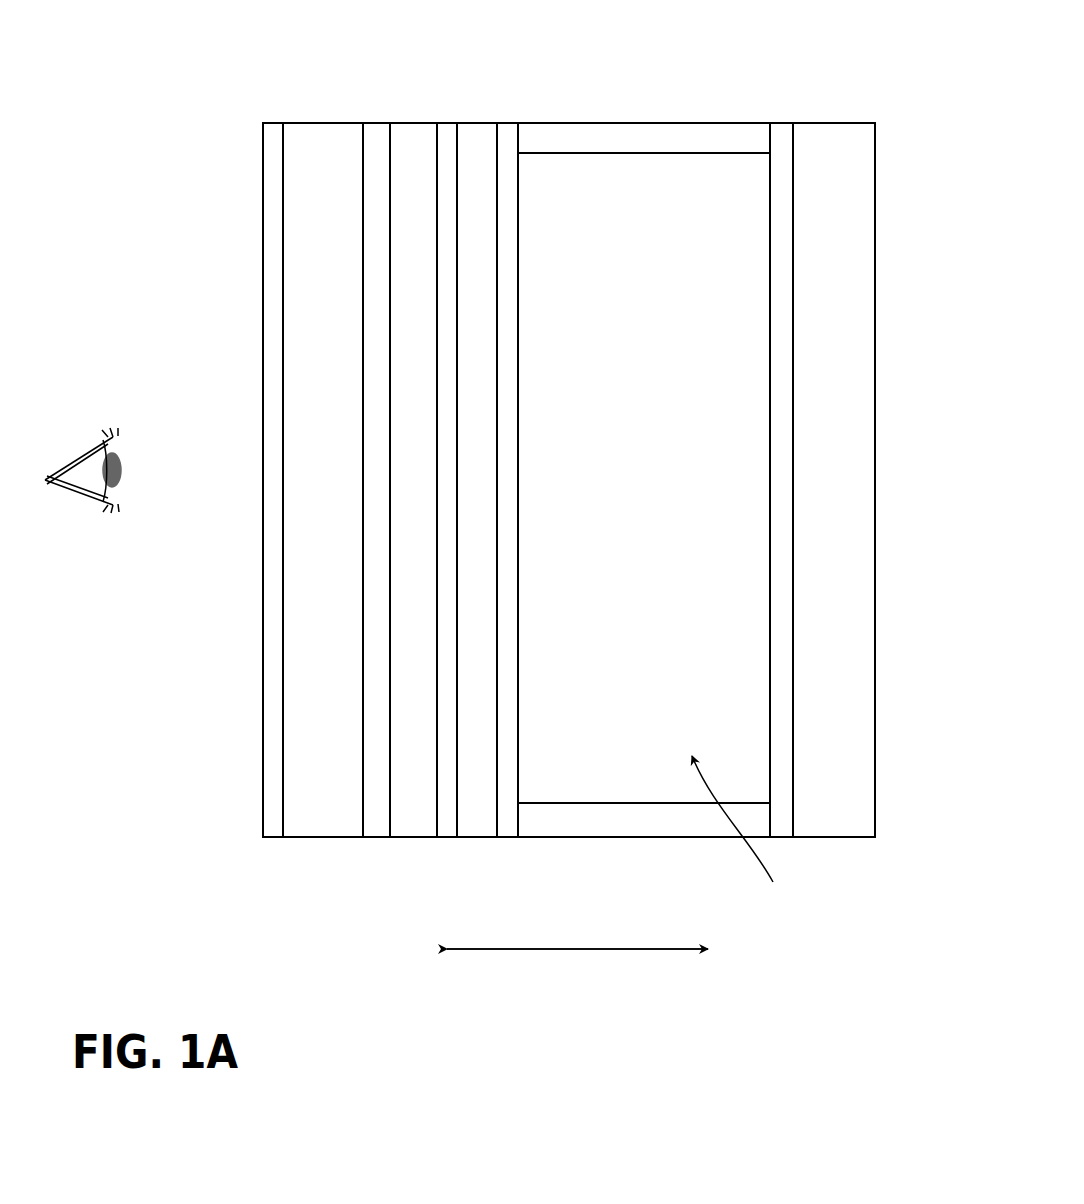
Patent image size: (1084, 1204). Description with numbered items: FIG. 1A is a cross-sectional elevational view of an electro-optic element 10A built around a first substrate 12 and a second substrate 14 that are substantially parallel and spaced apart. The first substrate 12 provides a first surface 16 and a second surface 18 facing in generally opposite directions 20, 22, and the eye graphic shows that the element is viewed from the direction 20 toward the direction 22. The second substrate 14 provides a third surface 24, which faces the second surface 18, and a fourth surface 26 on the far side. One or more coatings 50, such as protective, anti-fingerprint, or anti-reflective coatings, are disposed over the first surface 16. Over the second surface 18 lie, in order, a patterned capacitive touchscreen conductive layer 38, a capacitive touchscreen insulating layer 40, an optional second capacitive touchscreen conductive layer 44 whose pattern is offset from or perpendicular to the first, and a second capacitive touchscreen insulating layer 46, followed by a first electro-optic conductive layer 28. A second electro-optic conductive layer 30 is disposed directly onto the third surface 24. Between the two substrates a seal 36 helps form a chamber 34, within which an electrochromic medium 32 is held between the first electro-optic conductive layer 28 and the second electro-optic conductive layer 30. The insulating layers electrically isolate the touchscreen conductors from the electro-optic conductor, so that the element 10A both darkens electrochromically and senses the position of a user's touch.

The electro-optic element 10A is at (143, 110).
The first substrate 12 is at (302, 254).
The second substrate 14 is at (822, 254).
The first surface 16 is at (280, 212).
The second surface 18 is at (366, 356).
The direction 20 is at (561, 964).
The direction 22 is at (594, 964).
The third surface 24 is at (793, 318).
The fourth surface 26 is at (876, 207).
The first electro-optic conductive layer 28 is at (507, 135).
The second electro-optic conductive layer 30 is at (780, 138).
The electrochromic medium 32 is at (617, 502).
The chamber 34 is at (747, 835).
The seal 36 is at (665, 140).
The capacitive touchscreen conductive layer 38 is at (376, 137).
The capacitive touchscreen insulating layer 40 is at (437, 113).
The second capacitive touchscreen conductive layer 44 is at (445, 137).
The second capacitive touchscreen insulating layer 46 is at (457, 113).
The coatings 50 is at (273, 130).